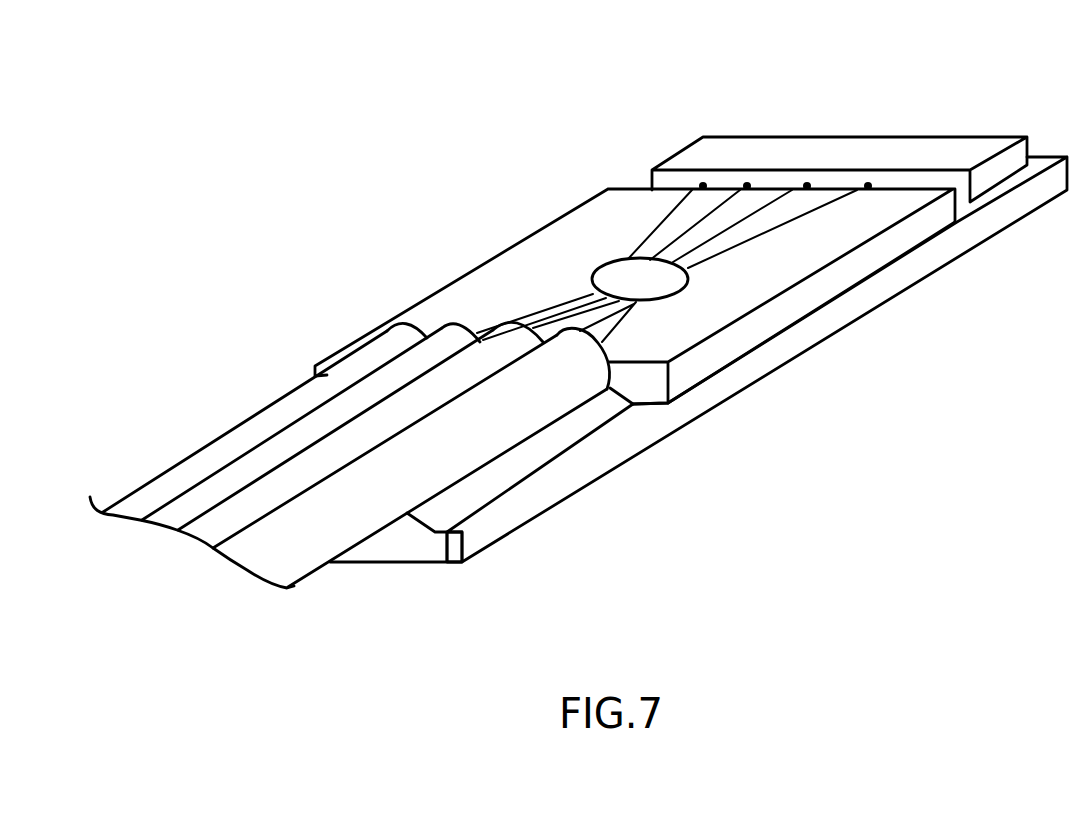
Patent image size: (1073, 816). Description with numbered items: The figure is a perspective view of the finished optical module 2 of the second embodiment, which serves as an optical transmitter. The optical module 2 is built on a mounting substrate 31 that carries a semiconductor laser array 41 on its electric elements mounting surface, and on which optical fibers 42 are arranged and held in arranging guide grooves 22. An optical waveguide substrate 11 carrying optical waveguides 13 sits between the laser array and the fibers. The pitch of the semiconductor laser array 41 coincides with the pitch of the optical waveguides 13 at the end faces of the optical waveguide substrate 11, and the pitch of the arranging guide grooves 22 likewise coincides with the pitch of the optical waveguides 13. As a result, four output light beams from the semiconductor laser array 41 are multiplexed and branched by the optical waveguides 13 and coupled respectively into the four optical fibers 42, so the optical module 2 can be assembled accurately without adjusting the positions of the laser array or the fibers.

The optical module 2 is at (712, 436).
The optical waveguide substrate 11 is at (543, 228).
The optical waveguides 13 is at (645, 245).
The arranging guide grooves 22 is at (440, 512).
The mounting substrate 31 is at (575, 493).
The semiconductor laser array 41 is at (902, 136).
The optical fibers 42 is at (240, 440).